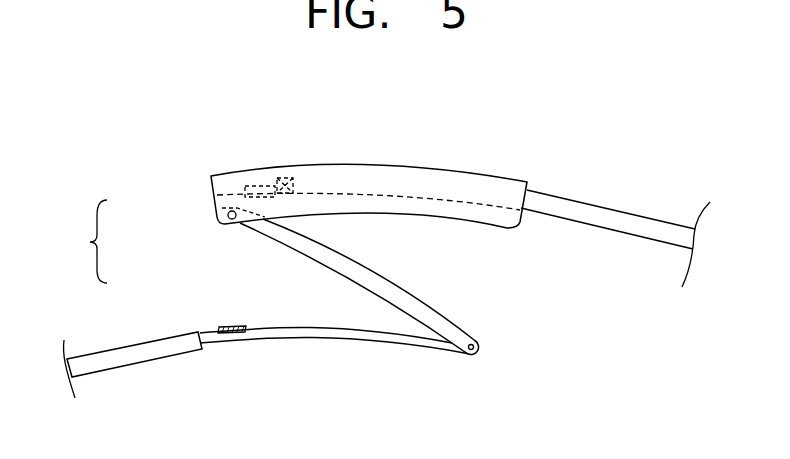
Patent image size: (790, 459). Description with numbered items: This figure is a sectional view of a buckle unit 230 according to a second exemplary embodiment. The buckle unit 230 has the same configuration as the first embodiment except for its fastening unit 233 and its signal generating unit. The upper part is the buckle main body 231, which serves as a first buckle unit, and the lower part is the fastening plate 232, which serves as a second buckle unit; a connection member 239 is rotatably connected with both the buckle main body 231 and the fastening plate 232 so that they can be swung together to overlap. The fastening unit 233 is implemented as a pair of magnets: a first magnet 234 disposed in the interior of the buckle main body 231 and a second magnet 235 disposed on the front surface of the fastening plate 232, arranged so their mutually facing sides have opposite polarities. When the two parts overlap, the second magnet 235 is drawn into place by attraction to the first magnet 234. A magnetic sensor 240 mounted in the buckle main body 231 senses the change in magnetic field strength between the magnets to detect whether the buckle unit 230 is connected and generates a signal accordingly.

The buckle unit 230 is at (381, 247).
The buckle main body 231 is at (393, 163).
The fastening plate 232 is at (348, 340).
The fastening unit 233 is at (159, 266).
The first magnet 234 is at (212, 199).
The second magnet 235 is at (232, 324).
The connection member 239 is at (400, 293).
The magnetic sensor 240 is at (283, 178).